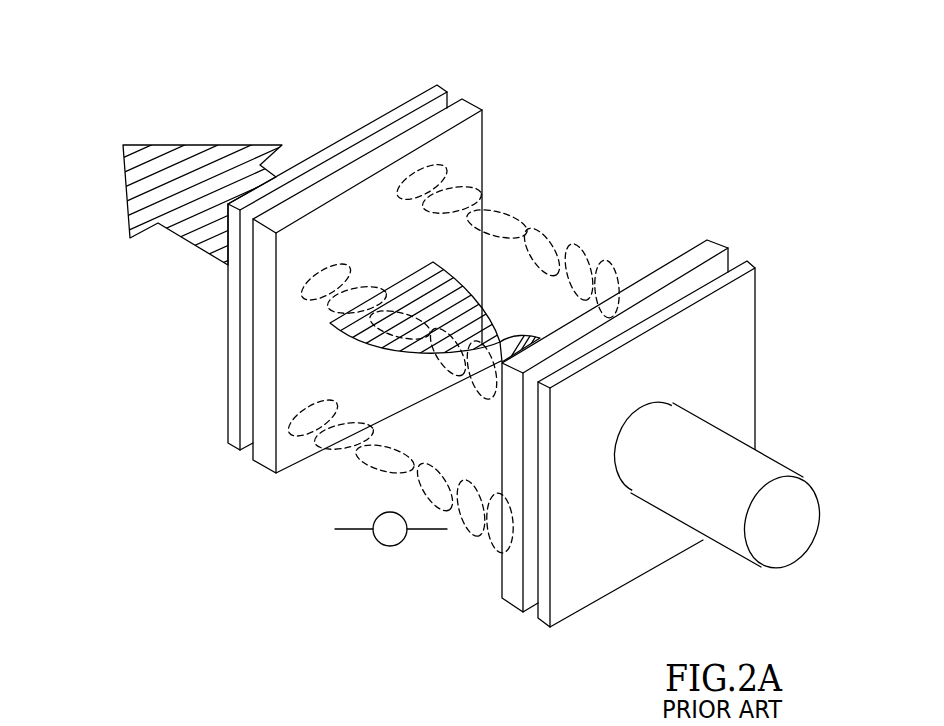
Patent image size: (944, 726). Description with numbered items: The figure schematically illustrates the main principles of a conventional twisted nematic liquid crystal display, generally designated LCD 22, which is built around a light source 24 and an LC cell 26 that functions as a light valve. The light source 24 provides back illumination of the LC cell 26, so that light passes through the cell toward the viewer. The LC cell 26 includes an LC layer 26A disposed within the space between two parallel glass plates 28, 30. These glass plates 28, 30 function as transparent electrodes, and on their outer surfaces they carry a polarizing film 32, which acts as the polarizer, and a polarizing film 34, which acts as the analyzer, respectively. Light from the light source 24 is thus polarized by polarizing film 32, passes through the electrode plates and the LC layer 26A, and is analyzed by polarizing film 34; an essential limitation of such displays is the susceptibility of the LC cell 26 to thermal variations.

The LCD 22 is at (230, 42).
The polarizing film (analyzing) 34 is at (435, 82).
The glass plate 30 is at (467, 102).
The LC cell 26 is at (546, 190).
The LC layer 26A is at (576, 248).
The glass plate 28 is at (717, 240).
The polarizing film (polarizing) 32 is at (752, 260).
The light source 24 is at (769, 444).